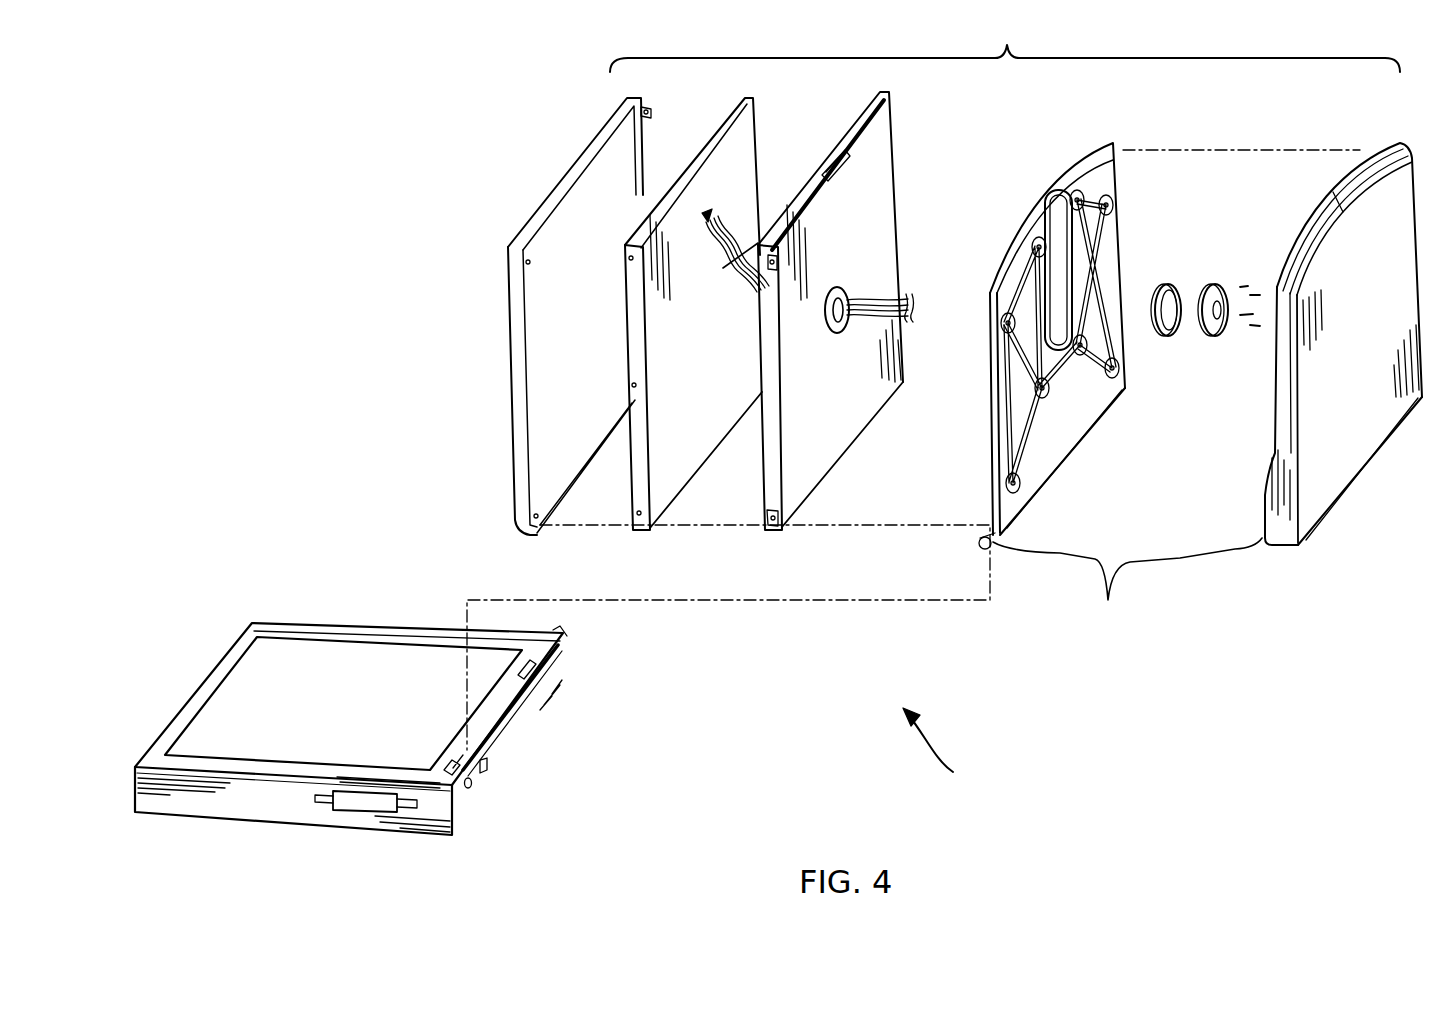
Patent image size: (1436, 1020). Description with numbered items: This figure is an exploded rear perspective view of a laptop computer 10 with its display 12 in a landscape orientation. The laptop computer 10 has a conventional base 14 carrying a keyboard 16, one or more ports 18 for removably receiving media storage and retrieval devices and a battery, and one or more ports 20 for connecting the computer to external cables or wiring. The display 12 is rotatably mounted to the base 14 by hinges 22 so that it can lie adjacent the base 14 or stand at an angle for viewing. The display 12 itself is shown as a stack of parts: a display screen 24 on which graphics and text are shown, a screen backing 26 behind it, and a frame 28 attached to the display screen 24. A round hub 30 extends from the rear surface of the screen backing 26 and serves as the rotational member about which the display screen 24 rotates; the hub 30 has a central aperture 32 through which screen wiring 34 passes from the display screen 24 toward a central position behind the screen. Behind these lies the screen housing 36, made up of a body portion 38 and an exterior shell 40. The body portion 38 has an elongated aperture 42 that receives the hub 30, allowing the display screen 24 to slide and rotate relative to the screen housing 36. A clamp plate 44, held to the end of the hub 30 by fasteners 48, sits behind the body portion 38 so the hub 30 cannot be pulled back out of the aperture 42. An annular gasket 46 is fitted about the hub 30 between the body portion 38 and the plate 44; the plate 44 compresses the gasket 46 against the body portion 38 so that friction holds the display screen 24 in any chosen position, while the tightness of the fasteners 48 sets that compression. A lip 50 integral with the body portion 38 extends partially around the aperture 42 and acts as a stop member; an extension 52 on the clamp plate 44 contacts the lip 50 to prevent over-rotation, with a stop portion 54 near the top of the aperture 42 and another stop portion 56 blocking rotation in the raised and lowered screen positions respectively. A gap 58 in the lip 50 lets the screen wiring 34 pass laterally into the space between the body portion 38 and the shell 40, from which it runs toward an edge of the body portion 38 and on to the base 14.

The laptop computer 10 is at (947, 750).
The display 12 is at (1005, 45).
The base 14 is at (405, 838).
The keyboard 16 is at (343, 703).
The ports 18 is at (357, 812).
The ports 20 is at (485, 770).
The hinges 22 is at (560, 640).
The display screen 24 is at (693, 314).
The screen backing 26 is at (830, 311).
The frame 28 is at (555, 205).
The hub 30 is at (850, 292).
The aperture 32 is at (855, 318).
The screen wiring 34 is at (718, 232).
The screen housing 36 is at (1127, 587).
The body portion 38 is at (1052, 346).
The exterior shell 40 is at (1343, 344).
The aperture 42 is at (1060, 252).
The plate 44 is at (1215, 288).
The gasket 46 is at (1170, 337).
The fasteners 48 is at (1257, 290).
The lip 50 is at (1090, 290).
The extension 52 is at (1210, 337).
The stop portion 54 is at (1045, 235).
The stop portion 56 is at (1030, 275).
The gap 58 is at (1000, 398).